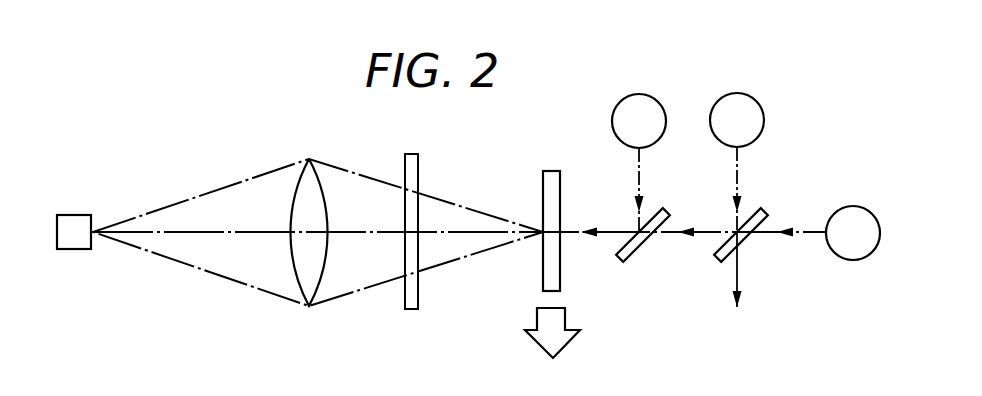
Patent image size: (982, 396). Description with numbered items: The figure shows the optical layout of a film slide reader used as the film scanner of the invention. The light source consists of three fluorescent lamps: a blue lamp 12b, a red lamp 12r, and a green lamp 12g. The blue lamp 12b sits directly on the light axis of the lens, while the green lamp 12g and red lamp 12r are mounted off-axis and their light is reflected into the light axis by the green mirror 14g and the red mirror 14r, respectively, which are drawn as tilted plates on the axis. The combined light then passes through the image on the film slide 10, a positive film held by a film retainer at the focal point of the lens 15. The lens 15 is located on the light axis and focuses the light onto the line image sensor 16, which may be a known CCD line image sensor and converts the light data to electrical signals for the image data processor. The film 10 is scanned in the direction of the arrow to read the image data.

The film slide 10 is at (547, 170).
The green lamp 12g is at (653, 93).
The red lamp 12r is at (753, 97).
The blue lamp 12b is at (855, 207).
The green mirror 14g is at (668, 212).
The red mirror 14r is at (768, 212).
The lens 15 is at (322, 182).
The line image sensor 16 is at (86, 214).